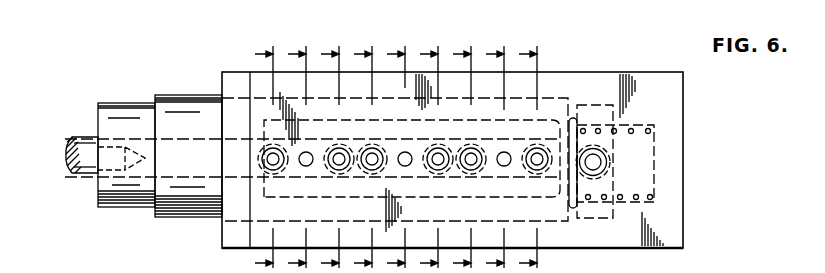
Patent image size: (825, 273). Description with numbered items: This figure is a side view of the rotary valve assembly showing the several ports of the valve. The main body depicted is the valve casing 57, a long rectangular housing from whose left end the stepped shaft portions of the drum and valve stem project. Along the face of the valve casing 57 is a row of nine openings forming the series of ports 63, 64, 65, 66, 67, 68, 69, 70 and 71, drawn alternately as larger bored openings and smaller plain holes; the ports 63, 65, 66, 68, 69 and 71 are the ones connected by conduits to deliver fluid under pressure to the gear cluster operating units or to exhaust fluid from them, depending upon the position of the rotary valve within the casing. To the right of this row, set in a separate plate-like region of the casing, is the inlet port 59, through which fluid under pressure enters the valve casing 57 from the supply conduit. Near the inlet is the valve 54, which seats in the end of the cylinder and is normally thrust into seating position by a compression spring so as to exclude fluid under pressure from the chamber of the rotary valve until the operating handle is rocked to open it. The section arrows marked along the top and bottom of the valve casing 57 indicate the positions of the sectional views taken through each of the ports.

The valve 54 is at (576, 206).
The valve casing 57 is at (694, 214).
The inlet port 59 is at (600, 164).
The port 63 is at (271, 152).
The port 64 is at (306, 154).
The port 65 is at (339, 152).
The port 66 is at (373, 152).
The port 67 is at (406, 154).
The port 68 is at (439, 152).
The port 69 is at (472, 152).
The port 70 is at (505, 154).
The port 71 is at (537, 152).